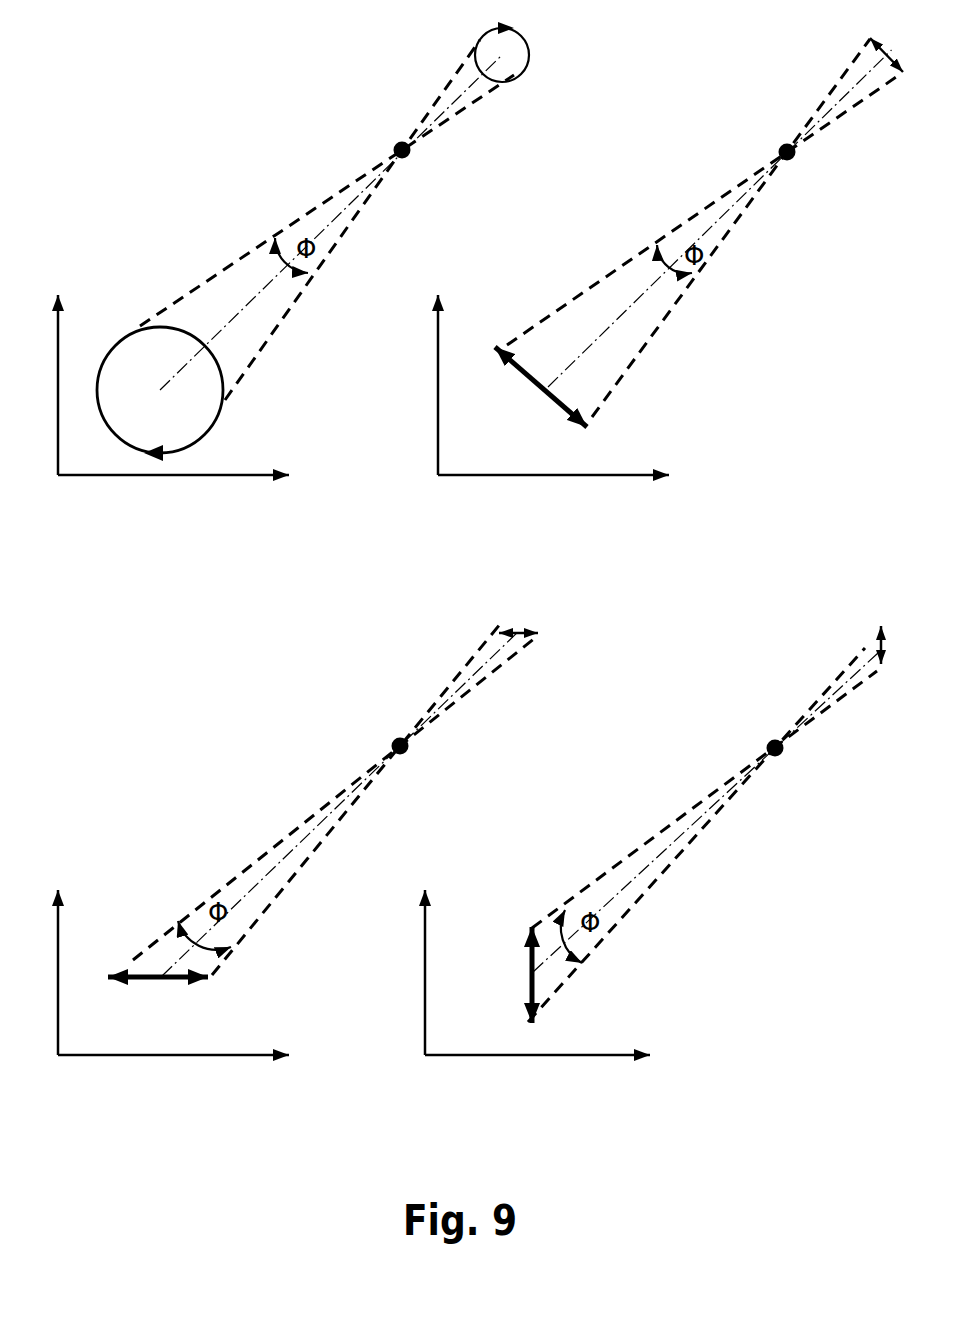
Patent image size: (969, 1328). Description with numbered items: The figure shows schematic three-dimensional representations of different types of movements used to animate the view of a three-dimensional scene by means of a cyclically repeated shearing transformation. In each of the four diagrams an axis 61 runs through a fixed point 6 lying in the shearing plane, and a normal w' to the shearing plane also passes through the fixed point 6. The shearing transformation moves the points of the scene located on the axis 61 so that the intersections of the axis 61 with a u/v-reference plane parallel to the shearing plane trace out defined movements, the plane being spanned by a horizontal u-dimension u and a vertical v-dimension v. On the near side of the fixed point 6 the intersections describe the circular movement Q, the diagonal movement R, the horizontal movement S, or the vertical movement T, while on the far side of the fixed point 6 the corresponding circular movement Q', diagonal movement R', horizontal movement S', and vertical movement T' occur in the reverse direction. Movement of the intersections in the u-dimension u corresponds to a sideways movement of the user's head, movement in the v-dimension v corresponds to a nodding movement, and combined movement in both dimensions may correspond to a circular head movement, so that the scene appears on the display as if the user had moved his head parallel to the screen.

The fixed point 6 is at (405, 158).
The axis 61 is at (230, 267).
The normal to the shearing plane w' is at (526, 513).
The circular movement Q is at (145, 445).
The circular movement in reverse direction Q' is at (486, 52).
The diagonal movement R is at (532, 455).
The diagonal movement in reverse direction R' is at (872, 44).
The horizontal movement S is at (144, 1060).
The horizontal movement in reverse direction S' is at (518, 614).
The vertical movement T is at (484, 1035).
The vertical movement in reverse direction T' is at (867, 635).
The u-dimension u is at (363, 784).
The v-dimension v is at (237, 675).